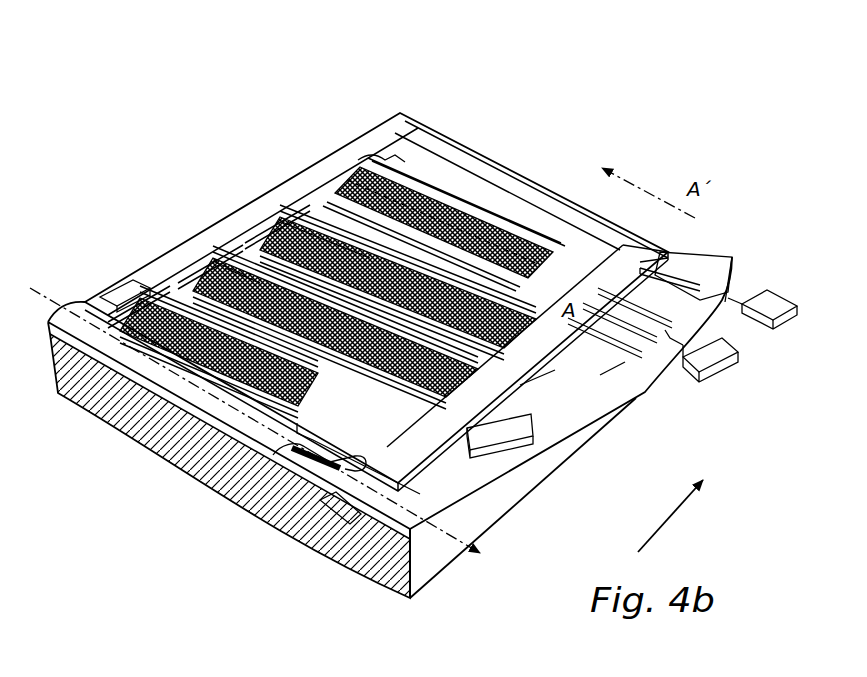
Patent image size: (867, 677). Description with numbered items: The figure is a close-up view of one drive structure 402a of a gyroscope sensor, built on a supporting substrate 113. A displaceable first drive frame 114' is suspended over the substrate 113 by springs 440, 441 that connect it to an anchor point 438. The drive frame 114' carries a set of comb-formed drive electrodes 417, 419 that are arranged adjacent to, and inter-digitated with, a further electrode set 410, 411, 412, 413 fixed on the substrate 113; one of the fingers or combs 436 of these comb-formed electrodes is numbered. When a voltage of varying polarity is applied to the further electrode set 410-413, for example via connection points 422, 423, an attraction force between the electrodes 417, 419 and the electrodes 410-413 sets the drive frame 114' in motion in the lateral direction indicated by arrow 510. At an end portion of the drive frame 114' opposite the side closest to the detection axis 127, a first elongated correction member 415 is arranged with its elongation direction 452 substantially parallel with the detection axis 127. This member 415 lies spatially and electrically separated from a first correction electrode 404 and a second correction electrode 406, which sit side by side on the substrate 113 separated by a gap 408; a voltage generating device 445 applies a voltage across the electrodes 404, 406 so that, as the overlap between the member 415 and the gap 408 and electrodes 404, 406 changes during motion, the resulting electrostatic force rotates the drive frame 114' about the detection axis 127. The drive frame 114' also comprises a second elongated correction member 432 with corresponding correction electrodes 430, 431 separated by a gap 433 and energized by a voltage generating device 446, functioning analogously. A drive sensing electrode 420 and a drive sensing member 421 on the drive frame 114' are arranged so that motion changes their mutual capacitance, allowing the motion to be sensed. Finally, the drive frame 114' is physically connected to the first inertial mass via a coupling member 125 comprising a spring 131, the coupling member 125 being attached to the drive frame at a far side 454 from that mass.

The drive structure 402a is at (120, 132).
The elongation direction 452 is at (364, 142).
The anchor point 438 is at (383, 152).
The electrode of further electrode set 411 is at (330, 218).
The drive electrode 417 is at (345, 204).
The spring 441 is at (400, 165).
The first elongated correction member 415 is at (462, 210).
The spring 440 is at (483, 212).
The second elongated correction member 432 is at (510, 190).
The second correction electrode 431 is at (663, 273).
The gap 433 is at (718, 262).
The first correction electrode 430 is at (700, 274).
The voltage generating device 445 is at (768, 300).
The voltage generating device 446 is at (722, 348).
The drive electrode 419 is at (252, 275).
The electrode of further electrode set 410 is at (315, 248).
The electrode of further electrode set 413 is at (215, 262).
The electrode of further electrode set 412 is at (228, 276).
The comb 436 is at (228, 268).
The drive sensing electrode 420 is at (130, 310).
The drive sensing member 421 is at (182, 312).
The first correction electrode 404 is at (655, 312).
The second correction electrode 406 is at (615, 368).
The lead 408 is at (655, 355).
The first drive frame 114' is at (593, 424).
The connection point 423 is at (628, 372).
The connection point 422 is at (512, 432).
The substrate 113 is at (460, 470).
The direction of motion 510 is at (674, 516).
The coupling member 125 is at (232, 414).
The spring 131 is at (297, 456).
The far side 454 is at (333, 505).
The detection axis 127 is at (460, 538).